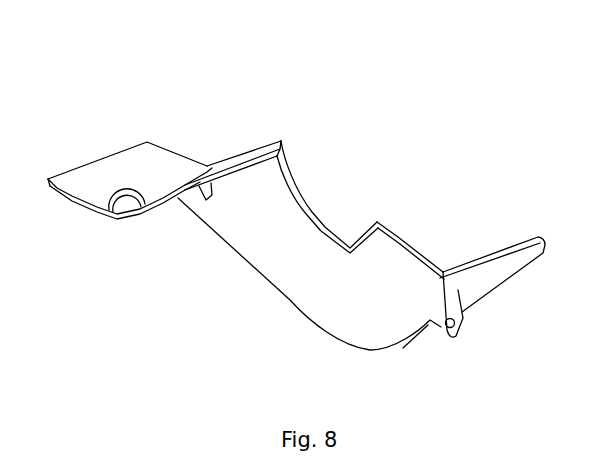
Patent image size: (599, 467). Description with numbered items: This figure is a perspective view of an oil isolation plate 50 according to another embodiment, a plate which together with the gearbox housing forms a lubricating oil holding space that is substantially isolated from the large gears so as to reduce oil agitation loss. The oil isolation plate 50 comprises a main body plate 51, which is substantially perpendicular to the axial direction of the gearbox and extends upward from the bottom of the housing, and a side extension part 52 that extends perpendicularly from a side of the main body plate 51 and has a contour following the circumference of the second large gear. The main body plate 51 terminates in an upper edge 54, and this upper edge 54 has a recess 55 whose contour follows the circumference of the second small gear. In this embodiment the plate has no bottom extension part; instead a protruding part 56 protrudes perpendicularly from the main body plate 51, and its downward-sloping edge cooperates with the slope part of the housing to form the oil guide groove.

The oil isolation plate 50 is at (98, 90).
The main body plate 51 is at (290, 300).
The side extension part 52 is at (66, 182).
The upper edge 54 is at (398, 237).
The recess 55 is at (312, 213).
The protruding part 56 is at (485, 260).